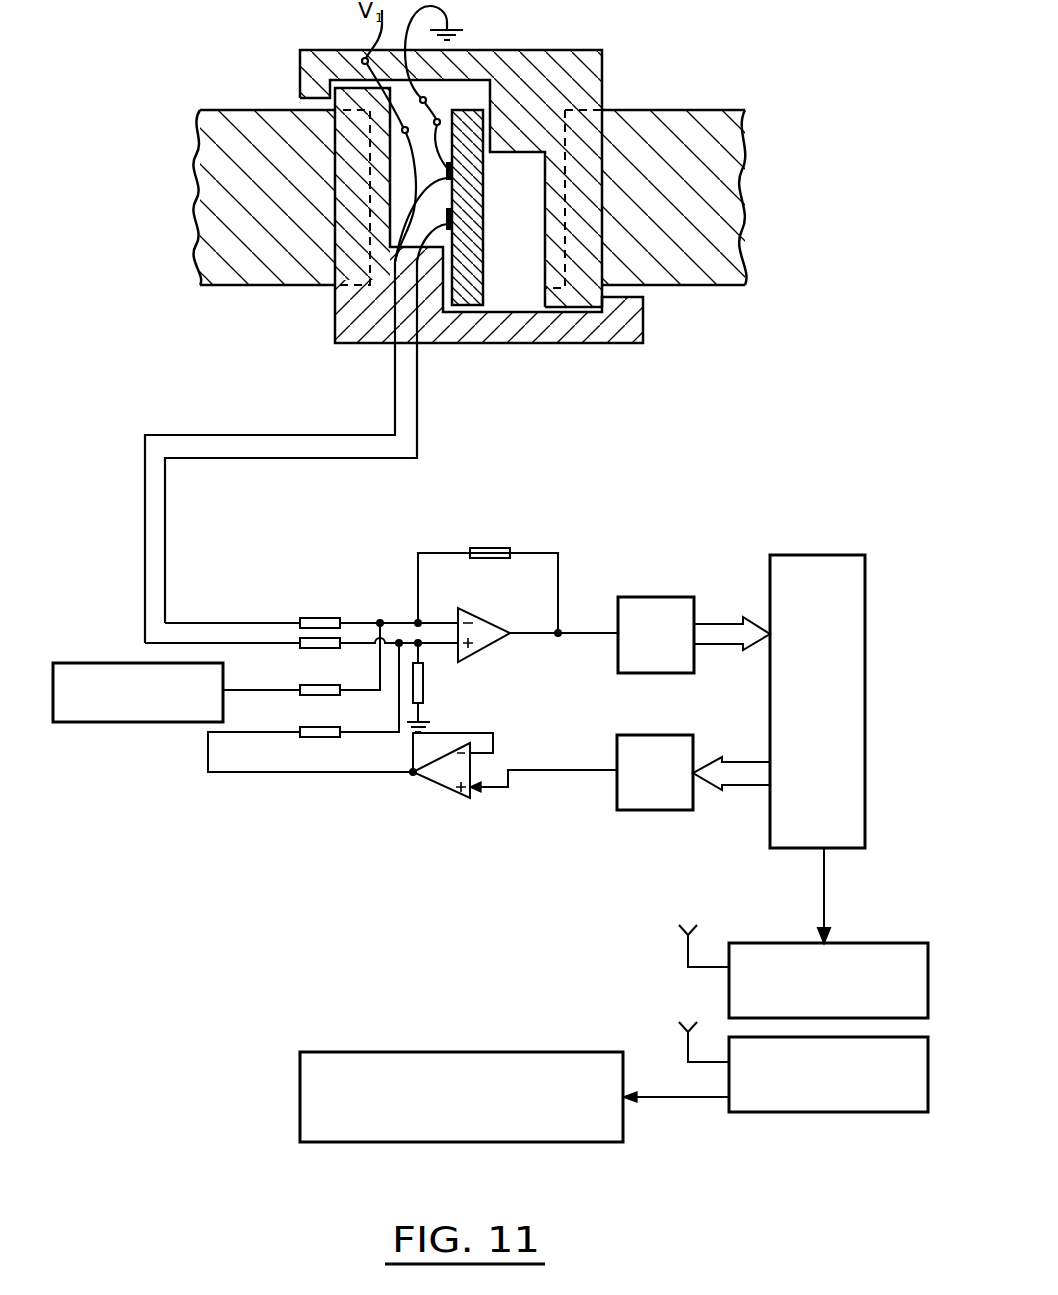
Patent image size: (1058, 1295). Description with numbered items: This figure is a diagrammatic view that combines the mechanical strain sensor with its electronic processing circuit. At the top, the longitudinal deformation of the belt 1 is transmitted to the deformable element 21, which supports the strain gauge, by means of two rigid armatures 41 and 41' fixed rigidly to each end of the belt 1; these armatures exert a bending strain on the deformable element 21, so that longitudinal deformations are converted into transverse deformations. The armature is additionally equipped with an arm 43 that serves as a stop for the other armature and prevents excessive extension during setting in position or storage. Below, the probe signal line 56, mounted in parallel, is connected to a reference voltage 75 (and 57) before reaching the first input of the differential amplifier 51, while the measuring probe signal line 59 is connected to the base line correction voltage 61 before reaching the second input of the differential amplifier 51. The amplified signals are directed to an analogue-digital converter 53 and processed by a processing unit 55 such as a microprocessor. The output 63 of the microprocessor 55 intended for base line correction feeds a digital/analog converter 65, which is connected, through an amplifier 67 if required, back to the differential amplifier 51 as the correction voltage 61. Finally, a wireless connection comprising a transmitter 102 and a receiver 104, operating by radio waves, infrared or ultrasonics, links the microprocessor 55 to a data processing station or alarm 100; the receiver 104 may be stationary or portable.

The belt 1 is at (735, 195).
The deformable element 21 is at (476, 108).
The rigid armature 41 is at (476, 178).
The rigid armature 41' is at (458, 215).
The arm 43 is at (545, 290).
The differential amplifier 51 is at (482, 648).
The analogue-digital converter 53 is at (620, 617).
The processing unit 55 is at (897, 556).
The probe signal line 56 is at (253, 622).
The reference voltage 57 is at (248, 692).
The measuring probe signal line 59 is at (252, 645).
The base line correction voltage 61 is at (413, 776).
The output of the microprocessor 63 is at (742, 790).
The digital/analog converter 65 is at (618, 755).
The amplifier 67 is at (446, 790).
The reference voltage 75 is at (96, 662).
The data processing station or alarm 100 is at (556, 1052).
The transmitter 102 is at (789, 925).
The receiver 104 is at (757, 1113).